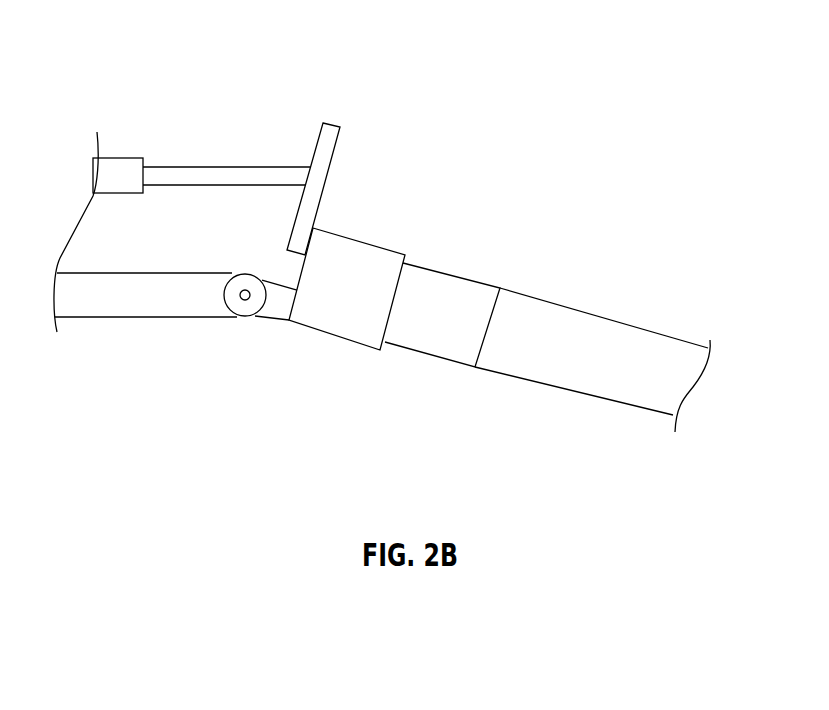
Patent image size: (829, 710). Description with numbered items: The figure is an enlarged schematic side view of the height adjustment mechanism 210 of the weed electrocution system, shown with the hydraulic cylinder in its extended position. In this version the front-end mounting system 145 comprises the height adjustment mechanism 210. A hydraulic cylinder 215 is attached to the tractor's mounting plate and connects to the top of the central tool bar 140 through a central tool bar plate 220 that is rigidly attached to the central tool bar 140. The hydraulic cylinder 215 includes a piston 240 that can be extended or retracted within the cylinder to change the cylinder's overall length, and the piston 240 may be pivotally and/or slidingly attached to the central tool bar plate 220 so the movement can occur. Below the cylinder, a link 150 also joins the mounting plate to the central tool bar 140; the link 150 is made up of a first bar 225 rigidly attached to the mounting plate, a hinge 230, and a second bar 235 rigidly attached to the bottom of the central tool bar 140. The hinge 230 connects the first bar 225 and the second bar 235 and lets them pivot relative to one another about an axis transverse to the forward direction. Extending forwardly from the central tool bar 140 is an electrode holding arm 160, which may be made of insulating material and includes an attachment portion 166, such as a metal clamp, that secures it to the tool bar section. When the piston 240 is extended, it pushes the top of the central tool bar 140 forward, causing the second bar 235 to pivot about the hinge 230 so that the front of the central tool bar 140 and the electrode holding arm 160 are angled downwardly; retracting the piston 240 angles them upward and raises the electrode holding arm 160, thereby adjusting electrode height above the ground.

The front-end mounting system 145 is at (430, 67).
The height adjustment mechanism 210 is at (300, 76).
The hydraulic cylinder 215 is at (120, 157).
The piston 240 is at (208, 170).
The central tool bar plate 220 is at (340, 152).
The link 150 is at (180, 401).
The first bar 225 is at (130, 312).
The hinge 230 is at (245, 317).
The second bar 235 is at (278, 318).
The central tool bar 140 is at (378, 252).
The attachment portion 166 is at (475, 278).
The electrode holding arm 160 is at (612, 322).